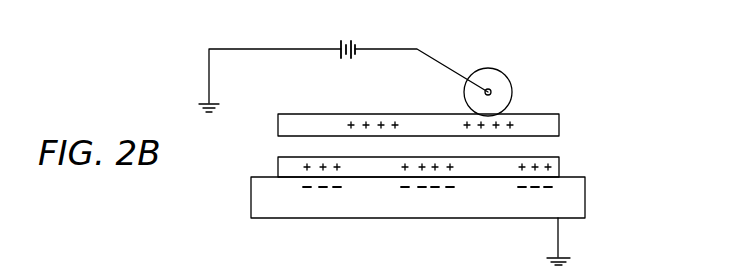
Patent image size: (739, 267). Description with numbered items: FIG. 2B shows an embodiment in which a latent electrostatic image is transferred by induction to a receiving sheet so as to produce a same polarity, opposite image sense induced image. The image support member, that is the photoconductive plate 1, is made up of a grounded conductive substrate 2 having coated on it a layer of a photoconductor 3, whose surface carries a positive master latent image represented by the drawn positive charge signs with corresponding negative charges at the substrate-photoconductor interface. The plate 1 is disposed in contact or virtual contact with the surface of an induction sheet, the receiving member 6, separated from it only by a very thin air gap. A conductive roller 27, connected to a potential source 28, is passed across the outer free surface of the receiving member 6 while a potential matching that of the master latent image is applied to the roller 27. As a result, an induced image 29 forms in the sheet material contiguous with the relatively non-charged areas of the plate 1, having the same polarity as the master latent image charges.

The potential source 28 is at (358, 48).
The conductive roller 27 is at (500, 78).
The induced image 29 is at (462, 122).
The receiving member 6 is at (560, 125).
The photoconductor 3 is at (560, 166).
The conductive substrate 2 is at (251, 197).
The photoconductive plate 1 is at (602, 194).